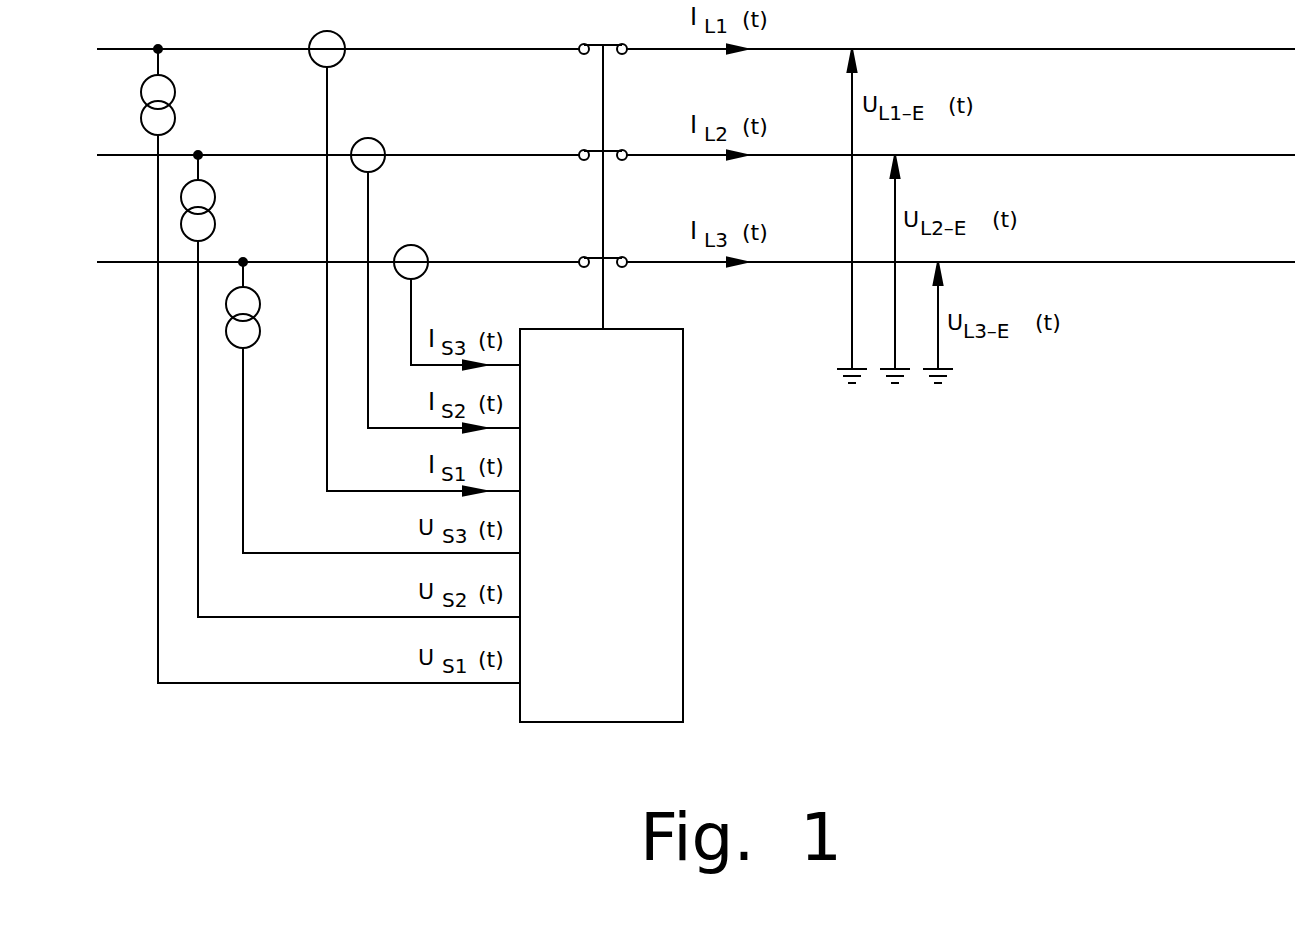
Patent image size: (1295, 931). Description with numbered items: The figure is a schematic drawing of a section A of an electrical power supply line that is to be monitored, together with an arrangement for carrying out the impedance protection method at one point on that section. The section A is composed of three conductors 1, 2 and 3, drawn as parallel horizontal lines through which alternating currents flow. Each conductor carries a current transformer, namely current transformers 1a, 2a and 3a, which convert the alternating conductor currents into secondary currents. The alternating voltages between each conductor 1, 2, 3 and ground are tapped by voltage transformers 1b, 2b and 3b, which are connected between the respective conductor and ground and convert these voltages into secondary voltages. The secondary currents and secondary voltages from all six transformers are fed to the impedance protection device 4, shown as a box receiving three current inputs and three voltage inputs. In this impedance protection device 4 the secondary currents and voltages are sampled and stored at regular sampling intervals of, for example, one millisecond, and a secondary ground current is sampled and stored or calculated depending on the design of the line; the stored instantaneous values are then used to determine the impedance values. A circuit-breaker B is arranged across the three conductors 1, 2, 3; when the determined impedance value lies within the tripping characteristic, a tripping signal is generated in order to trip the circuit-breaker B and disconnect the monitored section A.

The conductor 1 is at (1238, 49).
The conductor 2 is at (1238, 155).
The conductor 3 is at (1238, 262).
The current transformer 1a is at (332, 40).
The current transformer 2a is at (373, 147).
The current transformer 3a is at (416, 254).
The voltage transformer 1b is at (167, 106).
The voltage transformer 2b is at (207, 211).
The voltage transformer 3b is at (252, 316).
The impedance protection device 4 is at (683, 522).
The section of electrical power supply line A is at (1103, 83).
The circuit-breaker B is at (603, 296).